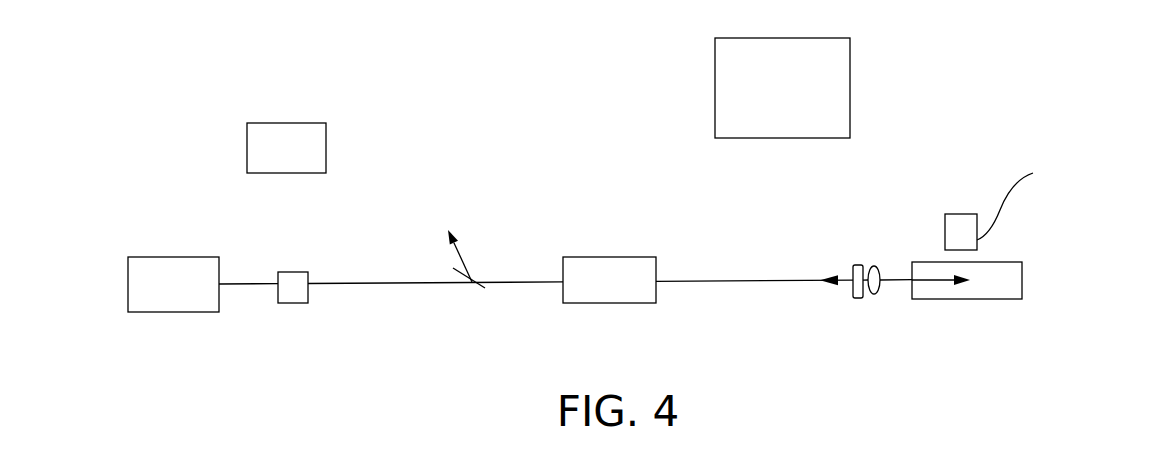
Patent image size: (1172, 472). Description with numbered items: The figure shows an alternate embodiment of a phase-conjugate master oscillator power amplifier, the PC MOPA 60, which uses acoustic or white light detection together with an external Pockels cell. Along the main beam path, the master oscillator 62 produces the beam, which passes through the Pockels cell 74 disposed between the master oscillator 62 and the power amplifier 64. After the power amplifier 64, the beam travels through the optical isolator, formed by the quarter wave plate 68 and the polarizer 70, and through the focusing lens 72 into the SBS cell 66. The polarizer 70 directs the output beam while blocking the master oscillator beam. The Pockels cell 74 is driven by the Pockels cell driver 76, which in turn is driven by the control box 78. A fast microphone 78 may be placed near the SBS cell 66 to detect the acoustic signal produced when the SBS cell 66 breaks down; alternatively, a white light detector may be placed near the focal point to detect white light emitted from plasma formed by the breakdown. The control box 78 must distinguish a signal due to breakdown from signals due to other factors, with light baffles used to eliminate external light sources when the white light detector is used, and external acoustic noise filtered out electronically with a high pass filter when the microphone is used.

The PC MOPA 60 is at (965, 141).
The master oscillator 62 is at (128, 312).
The power amplifier 64 is at (563, 303).
The SBS cell 66 is at (1002, 262).
The quarter wave plate 68 is at (857, 265).
The polarizer 70 is at (475, 276).
The focusing lens 72 is at (876, 266).
The Pockels cell 74 is at (278, 303).
The Pockels cell driver 76 is at (326, 157).
The control box 78 is at (850, 82).